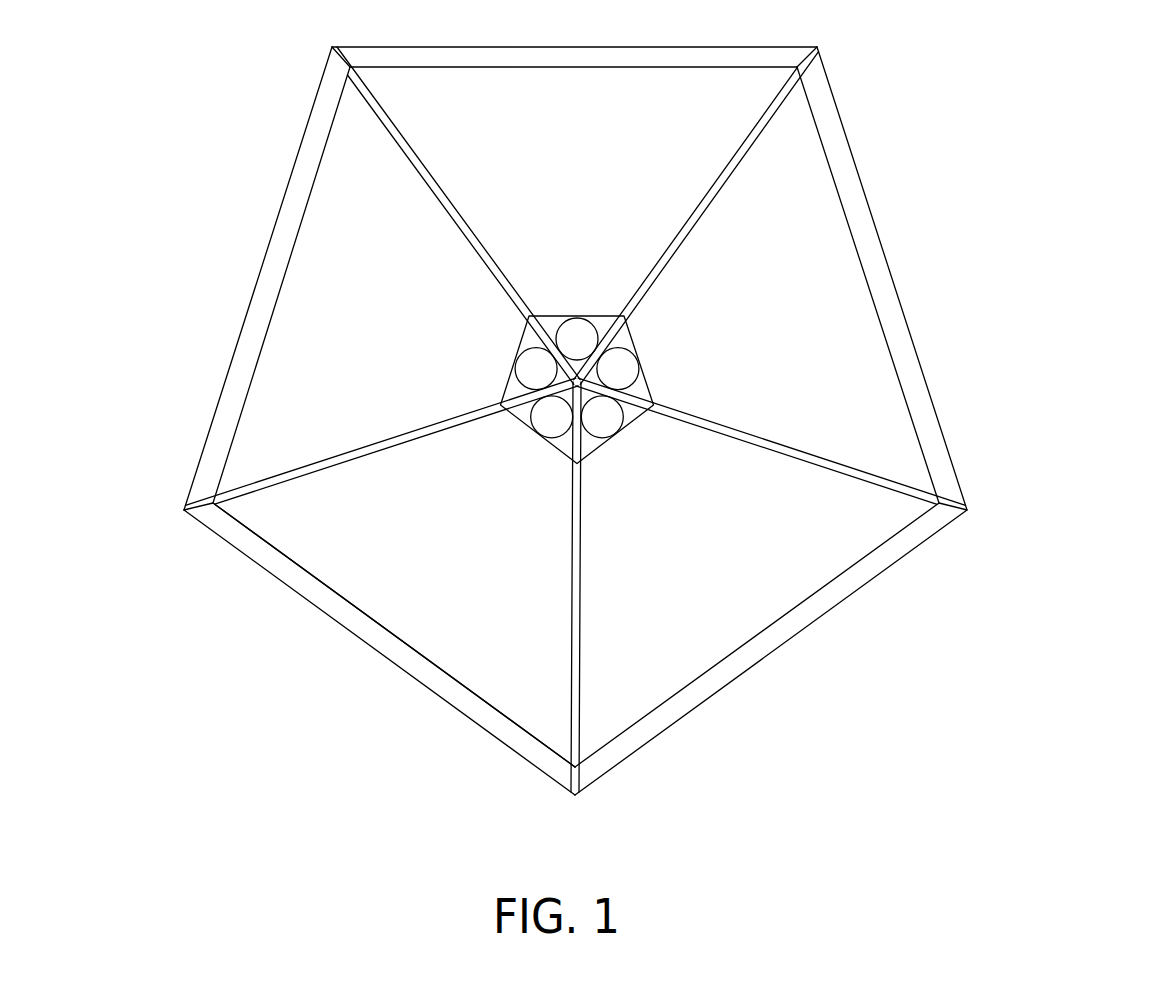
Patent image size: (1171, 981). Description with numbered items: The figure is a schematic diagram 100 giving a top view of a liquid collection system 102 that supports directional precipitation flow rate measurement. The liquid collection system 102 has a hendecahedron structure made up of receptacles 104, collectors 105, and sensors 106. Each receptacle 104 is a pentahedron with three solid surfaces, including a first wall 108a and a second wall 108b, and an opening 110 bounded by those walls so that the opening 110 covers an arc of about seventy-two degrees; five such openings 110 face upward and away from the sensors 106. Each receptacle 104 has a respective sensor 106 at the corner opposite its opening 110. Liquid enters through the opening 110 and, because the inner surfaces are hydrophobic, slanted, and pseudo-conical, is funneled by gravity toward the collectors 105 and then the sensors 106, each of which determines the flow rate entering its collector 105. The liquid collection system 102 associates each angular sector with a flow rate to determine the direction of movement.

The schematic diagram 100 is at (1032, 857).
The liquid collection system 102 is at (597, 46).
The receptacle 104 is at (425, 587).
The collector 105 is at (568, 460).
The sensor 106 is at (533, 426).
The first wall 108a is at (378, 440).
The second wall 108b is at (583, 612).
The opening 110 is at (345, 587).